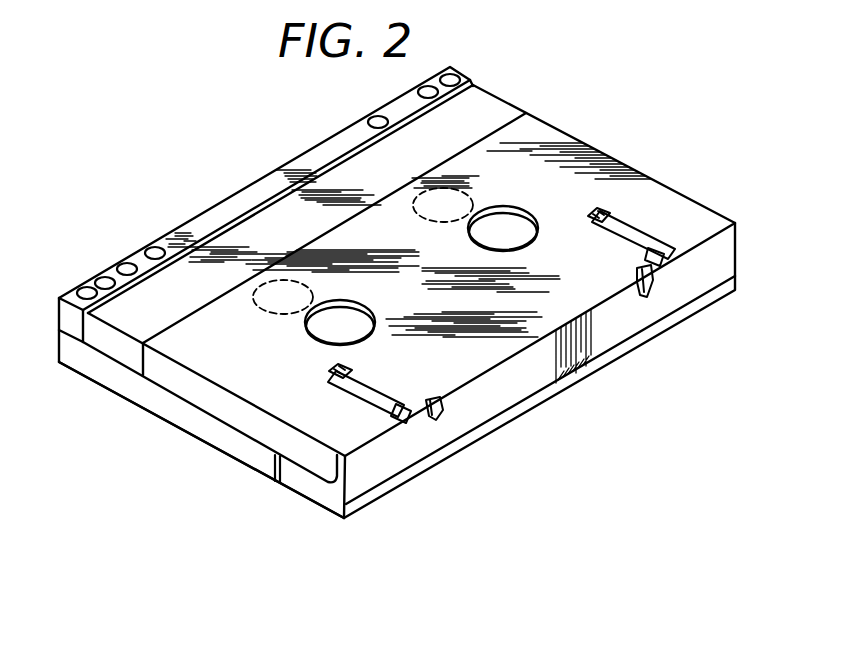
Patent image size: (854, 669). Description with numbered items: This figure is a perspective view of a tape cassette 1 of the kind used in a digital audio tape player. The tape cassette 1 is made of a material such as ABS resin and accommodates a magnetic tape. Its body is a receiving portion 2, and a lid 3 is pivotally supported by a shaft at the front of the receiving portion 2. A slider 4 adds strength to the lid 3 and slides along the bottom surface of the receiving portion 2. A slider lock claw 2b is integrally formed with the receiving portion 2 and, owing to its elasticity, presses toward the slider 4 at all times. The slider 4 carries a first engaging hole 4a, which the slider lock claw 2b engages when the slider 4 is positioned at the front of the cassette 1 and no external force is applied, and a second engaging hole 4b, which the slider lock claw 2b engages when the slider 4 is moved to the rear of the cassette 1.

The tape cassette 1 is at (176, 190).
The receiving portion 2 is at (111, 394).
The slider lock claw 2b is at (326, 375).
The lid 3 is at (417, 468).
The slider 4 is at (318, 468).
The first engaging hole 4a is at (377, 395).
The second engaging hole 4b is at (388, 418).